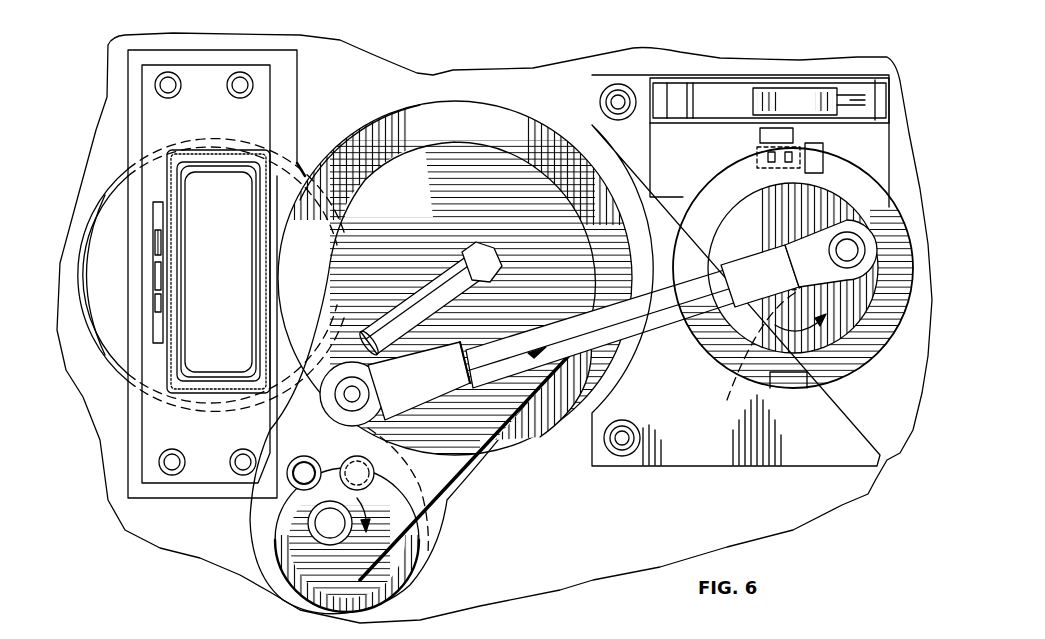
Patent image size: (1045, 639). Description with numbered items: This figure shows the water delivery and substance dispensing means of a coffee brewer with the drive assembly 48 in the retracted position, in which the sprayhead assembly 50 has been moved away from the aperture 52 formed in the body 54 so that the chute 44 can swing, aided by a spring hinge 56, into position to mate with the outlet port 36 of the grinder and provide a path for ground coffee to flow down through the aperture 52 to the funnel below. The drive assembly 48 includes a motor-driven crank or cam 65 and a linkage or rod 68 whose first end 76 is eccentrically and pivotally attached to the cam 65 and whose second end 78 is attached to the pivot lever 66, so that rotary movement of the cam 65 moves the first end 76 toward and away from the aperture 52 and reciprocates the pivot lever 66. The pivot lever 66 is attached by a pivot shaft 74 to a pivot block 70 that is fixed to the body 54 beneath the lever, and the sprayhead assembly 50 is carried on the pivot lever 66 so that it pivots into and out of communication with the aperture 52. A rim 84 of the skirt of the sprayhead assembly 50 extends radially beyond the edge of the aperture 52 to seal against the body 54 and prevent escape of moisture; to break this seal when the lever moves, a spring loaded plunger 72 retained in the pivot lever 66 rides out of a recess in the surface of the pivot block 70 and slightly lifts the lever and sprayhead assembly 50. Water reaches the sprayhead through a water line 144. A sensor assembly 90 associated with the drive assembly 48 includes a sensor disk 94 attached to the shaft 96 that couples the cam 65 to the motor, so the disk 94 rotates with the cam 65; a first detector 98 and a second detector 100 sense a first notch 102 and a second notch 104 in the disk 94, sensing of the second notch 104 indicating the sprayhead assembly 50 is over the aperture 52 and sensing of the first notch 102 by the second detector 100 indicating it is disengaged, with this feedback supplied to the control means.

The outlet port 36 is at (230, 163).
The chute 44 is at (210, 150).
The drive assembly 48 is at (675, 440).
The sprayhead assembly 50 is at (394, 98).
The aperture 52 is at (110, 345).
The body 54 is at (583, 568).
The spring hinge 56 is at (157, 200).
The crank or cam 65 is at (837, 337).
The pivot lever 66 is at (422, 483).
The linkage or rod 68 is at (585, 400).
The pivot block 70 is at (257, 560).
The spring loaded plunger 72 is at (378, 462).
The pivot shaft 74 is at (350, 540).
The first end 76 is at (867, 330).
The second end 78 is at (433, 470).
The rim 84 is at (367, 137).
The sensor assembly 90 is at (632, 68).
The sensor disk 94 is at (705, 380).
The shaft 96 is at (727, 385).
The first detector 98 is at (757, 130).
The second detector 100 is at (818, 150).
The first notch 102 is at (815, 147).
The second notch 104 is at (810, 380).
The water line 144 is at (427, 290).